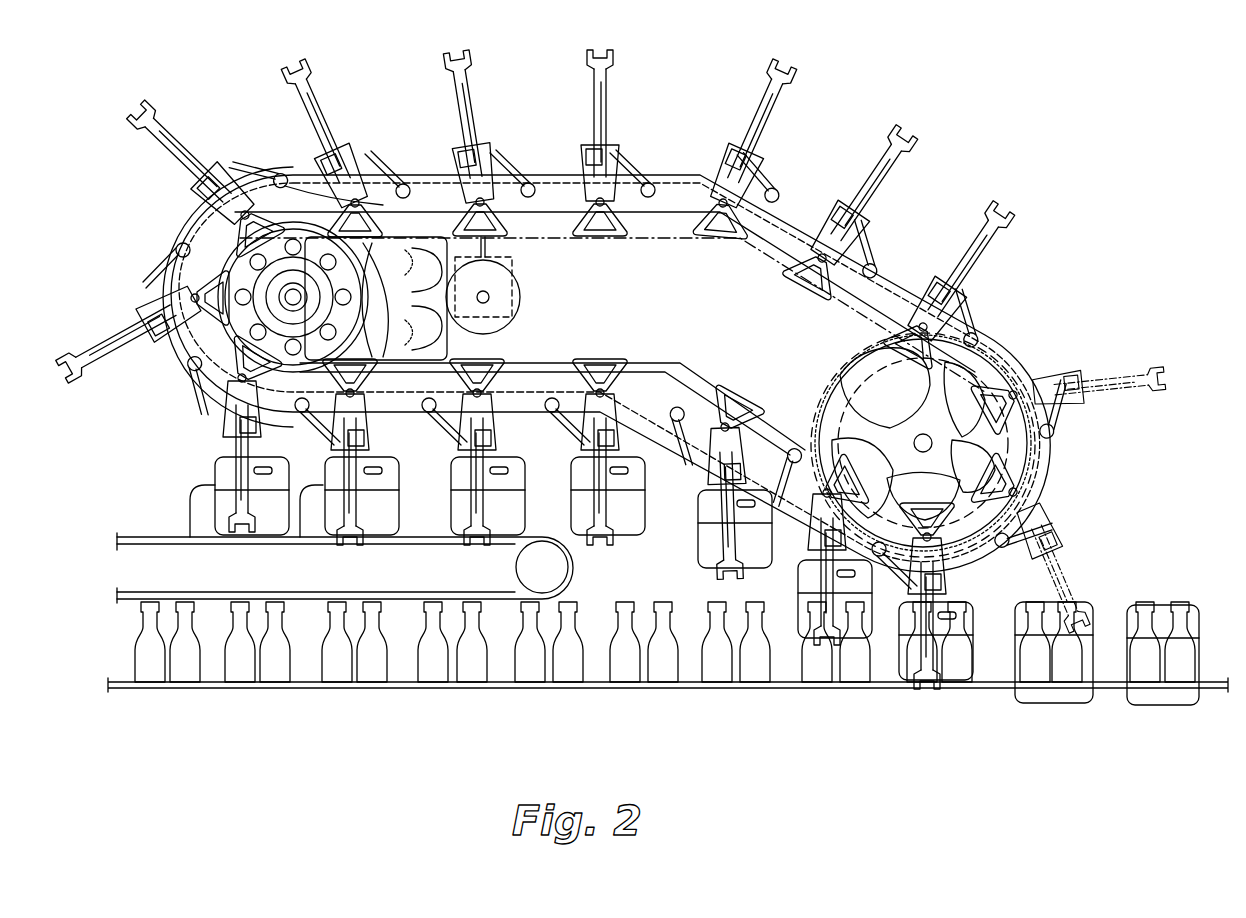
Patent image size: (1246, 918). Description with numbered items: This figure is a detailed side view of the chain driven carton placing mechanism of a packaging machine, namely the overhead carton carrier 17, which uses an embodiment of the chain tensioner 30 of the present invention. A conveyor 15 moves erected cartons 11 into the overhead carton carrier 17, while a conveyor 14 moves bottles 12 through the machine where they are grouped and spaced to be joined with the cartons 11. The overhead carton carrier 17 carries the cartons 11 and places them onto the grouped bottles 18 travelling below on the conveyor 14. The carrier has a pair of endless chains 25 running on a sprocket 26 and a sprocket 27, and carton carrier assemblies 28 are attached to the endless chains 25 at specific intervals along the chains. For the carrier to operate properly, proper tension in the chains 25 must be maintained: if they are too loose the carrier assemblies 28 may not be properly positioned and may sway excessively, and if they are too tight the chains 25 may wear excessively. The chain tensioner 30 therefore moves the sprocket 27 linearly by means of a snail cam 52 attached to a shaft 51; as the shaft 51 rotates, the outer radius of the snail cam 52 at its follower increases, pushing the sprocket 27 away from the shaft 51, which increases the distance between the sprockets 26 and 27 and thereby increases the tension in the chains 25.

The cartons 11 is at (215, 460).
The bottles 12 is at (135, 660).
The conveyor 14 is at (470, 690).
The conveyor 15 is at (165, 535).
The overhead carton carrier 17 is at (975, 148).
The grouped bottles 18 is at (683, 655).
The endless chains 25 is at (993, 340).
The sprocket 26 is at (902, 420).
The sprocket 27 is at (383, 333).
The carton carrier assemblies 28 is at (405, 177).
The chain tensioner 30 is at (555, 298).
The shaft 51 is at (487, 293).
The snail cam 52 is at (513, 333).